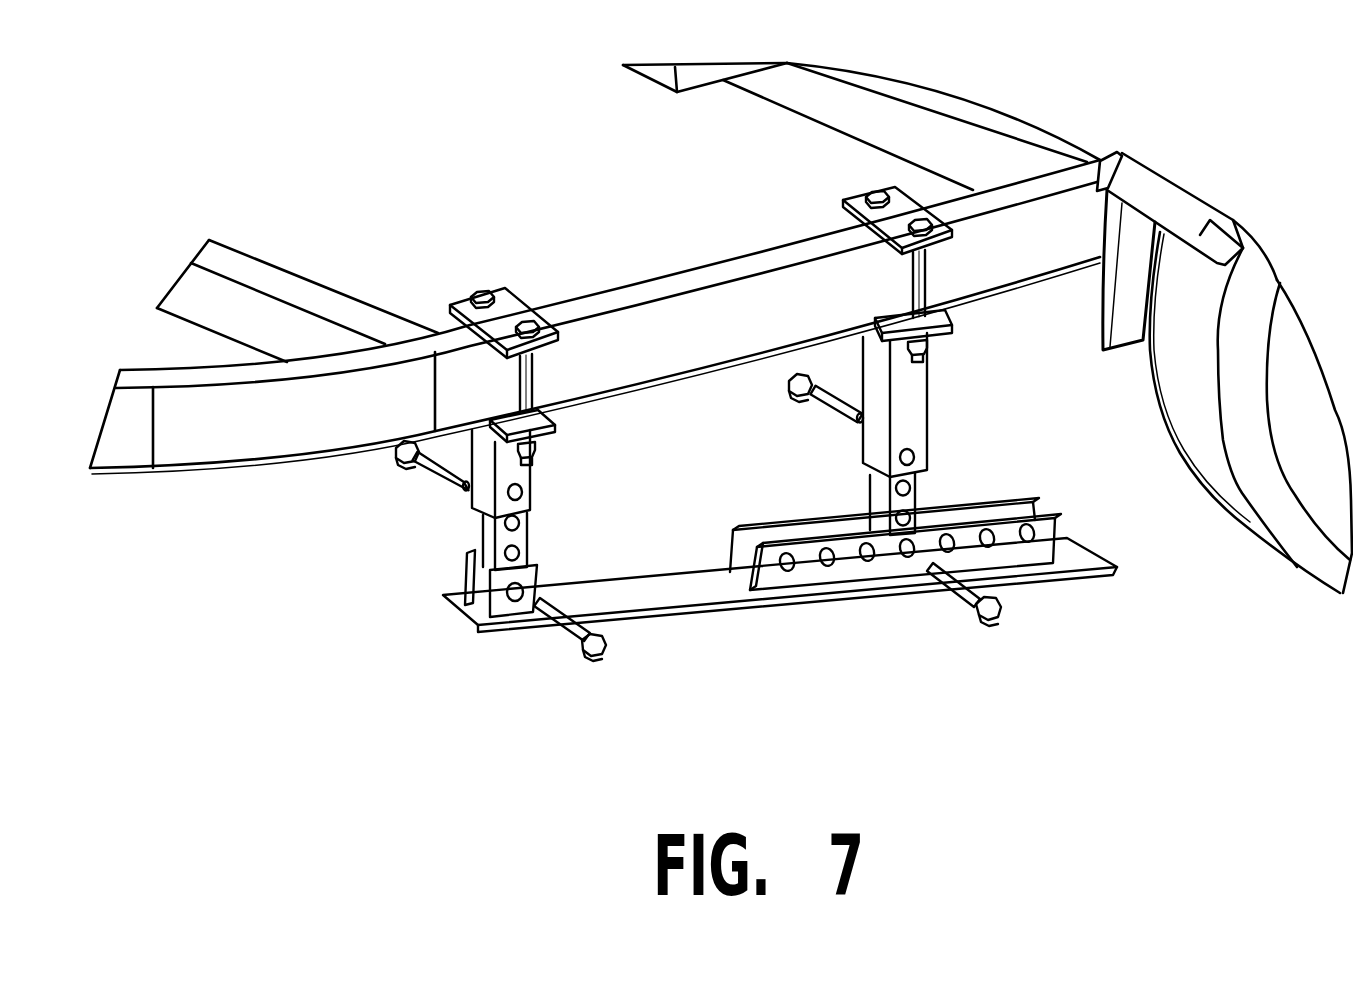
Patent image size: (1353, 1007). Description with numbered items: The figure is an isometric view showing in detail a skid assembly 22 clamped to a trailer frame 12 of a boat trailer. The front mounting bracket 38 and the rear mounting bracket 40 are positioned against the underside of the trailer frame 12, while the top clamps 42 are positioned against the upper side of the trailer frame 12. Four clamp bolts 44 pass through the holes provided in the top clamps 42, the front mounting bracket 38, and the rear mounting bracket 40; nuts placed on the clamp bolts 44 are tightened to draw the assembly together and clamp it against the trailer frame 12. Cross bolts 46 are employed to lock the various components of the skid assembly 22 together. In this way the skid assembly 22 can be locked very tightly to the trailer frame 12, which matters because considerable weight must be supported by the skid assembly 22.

The trailer frame 12 is at (633, 280).
The skid assembly 22 is at (770, 647).
The front mounting bracket 38 is at (465, 497).
The rear mounting bracket 40 is at (920, 438).
The top clamps 42 is at (505, 348).
The clamp bolts 44 is at (950, 328).
The cross bolts 46 is at (997, 617).